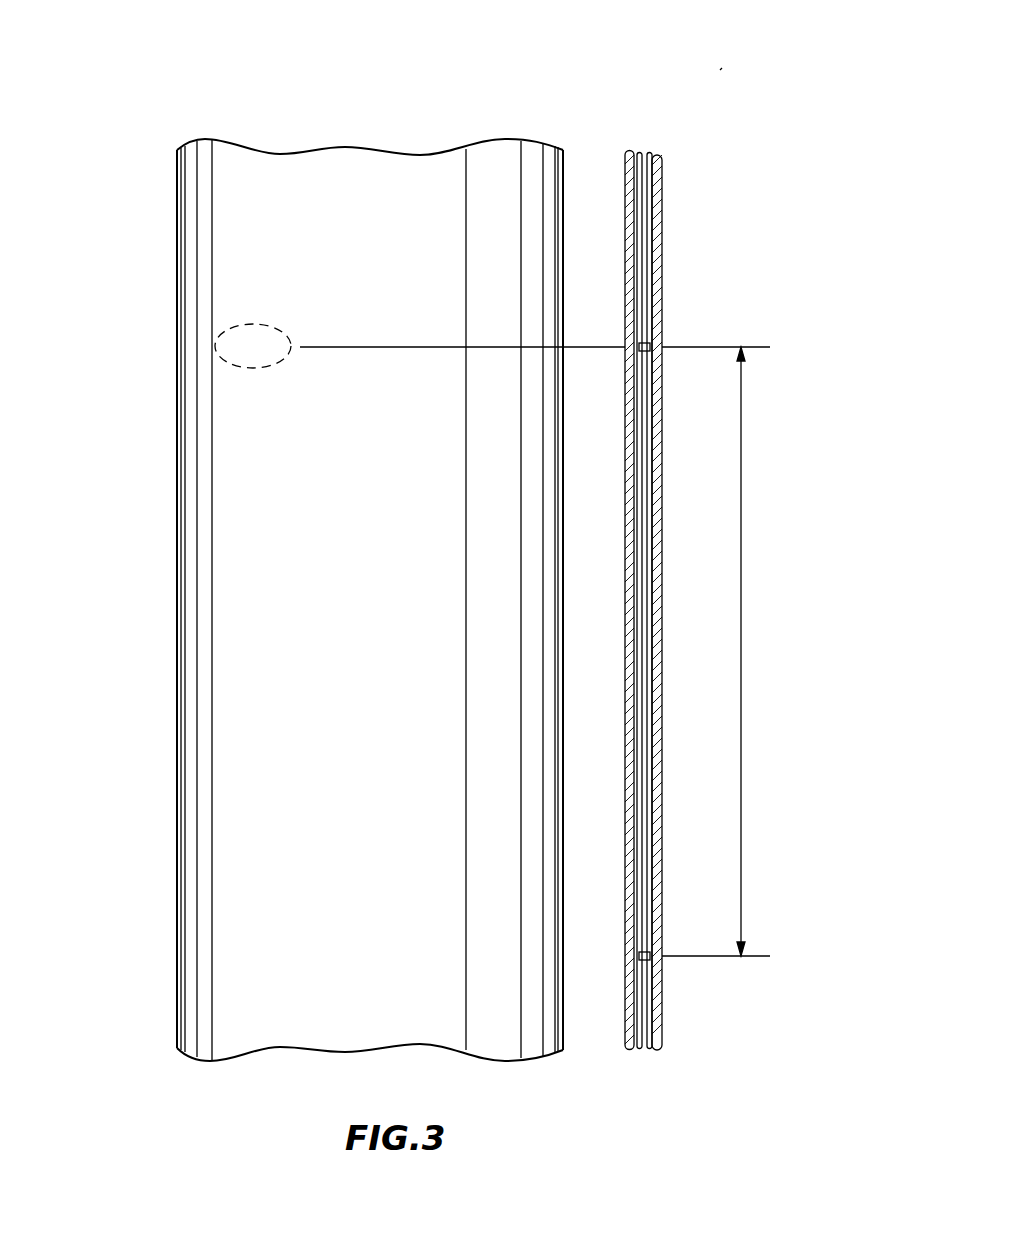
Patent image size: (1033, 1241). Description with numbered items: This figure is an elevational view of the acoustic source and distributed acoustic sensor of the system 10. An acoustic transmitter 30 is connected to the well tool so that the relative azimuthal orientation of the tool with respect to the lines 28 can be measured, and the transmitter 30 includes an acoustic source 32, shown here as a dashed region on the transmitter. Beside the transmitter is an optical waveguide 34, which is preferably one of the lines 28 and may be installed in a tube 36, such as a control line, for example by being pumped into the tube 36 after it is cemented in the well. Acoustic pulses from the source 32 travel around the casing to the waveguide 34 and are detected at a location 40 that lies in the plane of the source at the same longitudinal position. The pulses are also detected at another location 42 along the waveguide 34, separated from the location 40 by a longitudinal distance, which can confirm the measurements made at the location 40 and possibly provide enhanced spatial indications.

The panel assembly 10 is at (718, 72).
The lines 28 is at (547, 627).
The acoustic transmitter 30 is at (176, 1005).
The acoustic source 32 is at (268, 367).
The optical waveguide 34 is at (648, 198).
The tube 36 is at (663, 170).
The location 40 is at (645, 345).
The location 42 is at (645, 958).